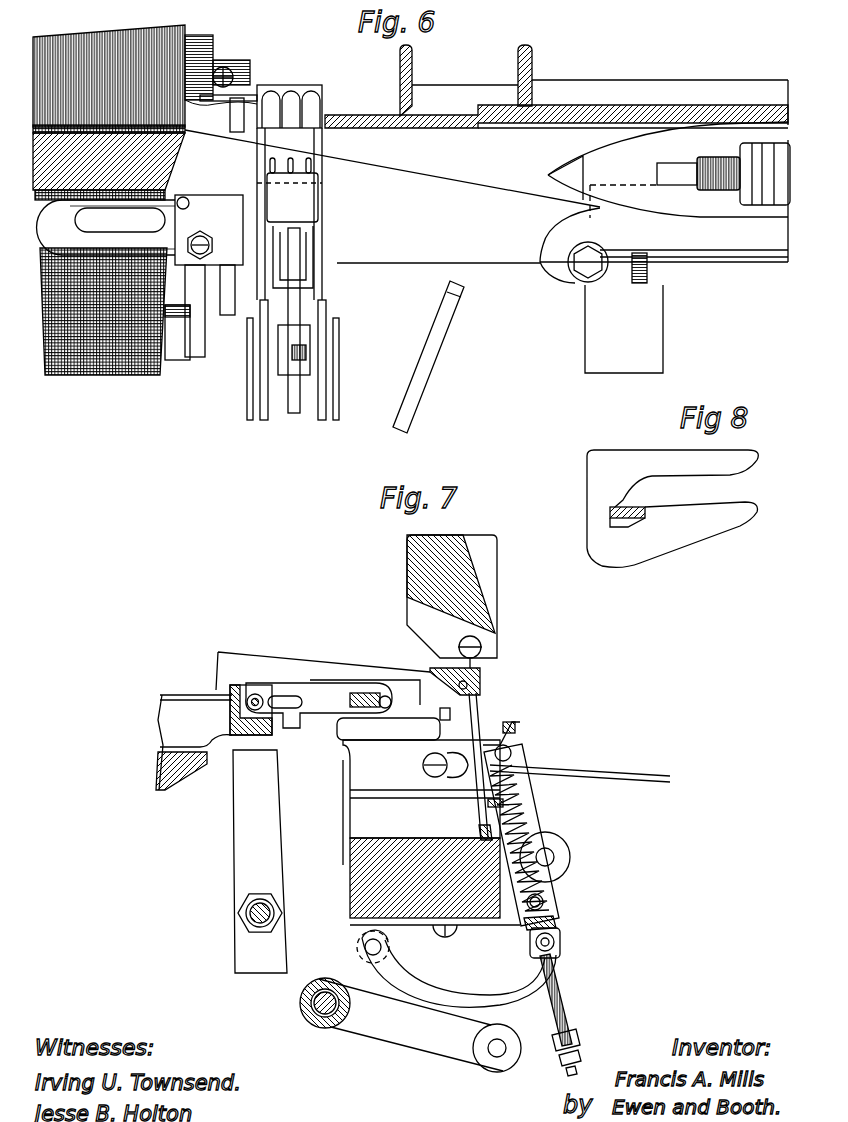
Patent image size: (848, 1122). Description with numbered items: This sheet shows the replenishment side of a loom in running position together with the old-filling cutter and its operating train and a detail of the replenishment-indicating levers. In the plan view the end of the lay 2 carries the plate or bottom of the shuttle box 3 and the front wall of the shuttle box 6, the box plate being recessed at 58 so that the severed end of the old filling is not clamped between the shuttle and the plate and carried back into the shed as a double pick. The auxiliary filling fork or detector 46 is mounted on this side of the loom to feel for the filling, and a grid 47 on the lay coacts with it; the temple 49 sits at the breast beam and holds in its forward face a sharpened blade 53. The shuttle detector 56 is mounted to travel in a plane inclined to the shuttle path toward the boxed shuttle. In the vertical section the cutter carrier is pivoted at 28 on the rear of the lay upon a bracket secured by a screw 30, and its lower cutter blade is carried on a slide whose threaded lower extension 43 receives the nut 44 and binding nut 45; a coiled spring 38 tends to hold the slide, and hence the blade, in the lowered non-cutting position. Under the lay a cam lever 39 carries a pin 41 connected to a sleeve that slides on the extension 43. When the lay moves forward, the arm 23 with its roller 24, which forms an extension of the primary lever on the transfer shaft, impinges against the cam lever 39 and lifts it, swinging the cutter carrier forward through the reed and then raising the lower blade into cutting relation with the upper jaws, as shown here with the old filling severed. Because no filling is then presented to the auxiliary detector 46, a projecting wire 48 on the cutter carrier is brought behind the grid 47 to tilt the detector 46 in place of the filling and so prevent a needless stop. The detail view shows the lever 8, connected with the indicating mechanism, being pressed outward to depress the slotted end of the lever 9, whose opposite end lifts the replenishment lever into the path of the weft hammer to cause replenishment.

In FIG. 6, the plate or bottom of the shuttle box 3 is at (606, 135).
In FIG. 6, the front wall of the shuttle box 6 is at (724, 240).
In FIG. 6, the auxiliary filling fork or detector 46 is at (307, 200).
In FIG. 7, the auxiliary filling fork or detector 46 is at (480, 718).
In FIG. 6, the grid 47 is at (263, 90).
In FIG. 6, the temple 49 is at (163, 210).
In FIG. 6, the shuttle detector 56 is at (416, 371).
In FIG. 6, the recessed portion of the box plate 58 is at (590, 213).
In FIG. 8, the lever 8 is at (628, 507).
In FIG. 8, the lever 9 is at (666, 456).
In FIG. 7, the blade 53 is at (450, 712).
In FIG. 7, the projecting portion or wire 48 is at (495, 806).
In FIG. 7, the coiled spring 38 is at (532, 825).
In FIG. 7, the pivot of the cutter carrier 28 is at (548, 855).
In FIG. 7, the pin 41 is at (557, 937).
In FIG. 7, the lower end or extension of the slide or rod 43 is at (562, 1005).
In FIG. 7, the nut 44 is at (573, 1042).
In FIG. 7, the binding nut 45 is at (577, 1055).
In FIG. 7, the lay 2 is at (352, 905).
In FIG. 7, the screw 30 is at (435, 946).
In FIG. 7, the cam lever 39 is at (440, 987).
In FIG. 7, the arm 23 is at (407, 1038).
In FIG. 7, the roller 24 is at (497, 1072).